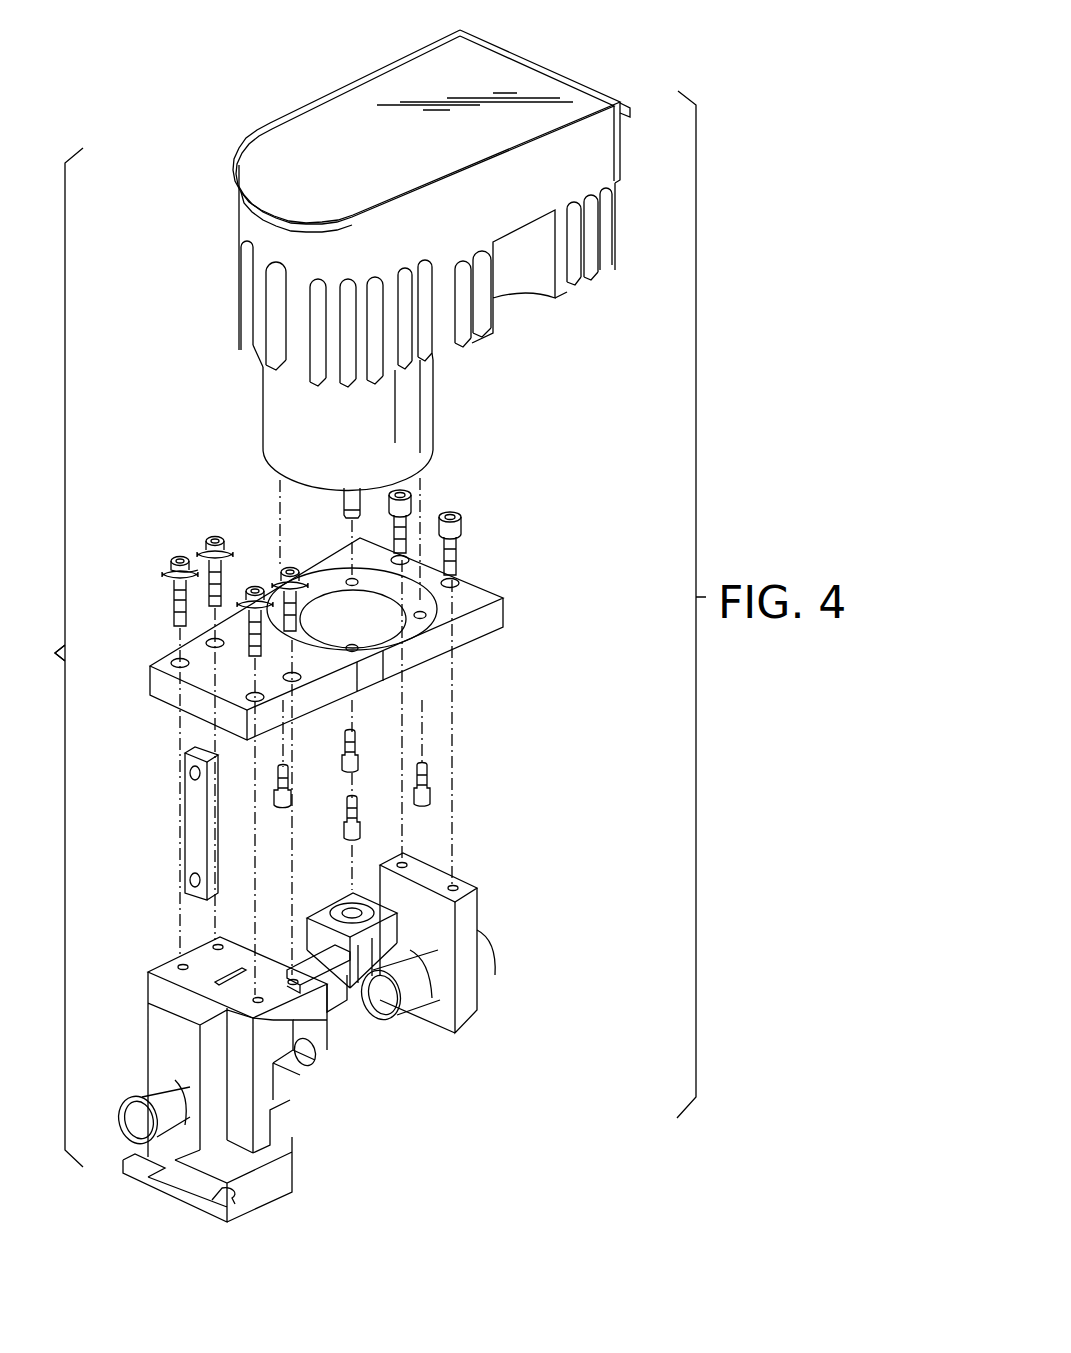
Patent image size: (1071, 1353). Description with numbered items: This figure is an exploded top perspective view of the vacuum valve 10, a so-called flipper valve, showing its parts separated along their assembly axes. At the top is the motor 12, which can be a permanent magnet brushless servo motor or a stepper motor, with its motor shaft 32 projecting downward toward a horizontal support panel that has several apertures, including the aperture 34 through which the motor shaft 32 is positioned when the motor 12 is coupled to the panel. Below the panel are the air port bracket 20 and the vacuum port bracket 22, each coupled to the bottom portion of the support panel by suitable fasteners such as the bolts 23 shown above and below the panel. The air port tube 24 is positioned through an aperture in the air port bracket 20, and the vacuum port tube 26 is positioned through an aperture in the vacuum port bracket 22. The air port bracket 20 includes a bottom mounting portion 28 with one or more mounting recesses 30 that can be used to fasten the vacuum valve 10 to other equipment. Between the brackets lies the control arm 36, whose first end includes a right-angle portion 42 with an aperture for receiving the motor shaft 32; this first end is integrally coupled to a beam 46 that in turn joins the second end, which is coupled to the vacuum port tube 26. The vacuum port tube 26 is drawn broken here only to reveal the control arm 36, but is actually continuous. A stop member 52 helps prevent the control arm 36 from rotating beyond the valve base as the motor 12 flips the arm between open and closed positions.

The vacuum valve 10 is at (43, 653).
The motor 12 is at (350, 120).
The air port bracket 20 is at (162, 1030).
The vacuum port bracket 22 is at (468, 1008).
The bolts 23 is at (253, 633).
The air port tube 24 is at (162, 1097).
The vacuum port tube 26 is at (305, 1052).
The bottom mounting portion 28 is at (188, 1200).
The mounting recesses 30 is at (245, 1202).
The motor shaft 32 is at (343, 500).
The aperture 34 is at (380, 627).
The control arm 36 is at (303, 965).
The right-angle portion 42 is at (308, 930).
The beam 46 is at (328, 988).
The stop member 52 is at (192, 818).